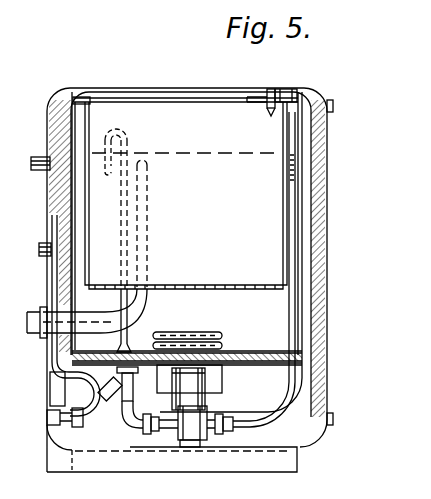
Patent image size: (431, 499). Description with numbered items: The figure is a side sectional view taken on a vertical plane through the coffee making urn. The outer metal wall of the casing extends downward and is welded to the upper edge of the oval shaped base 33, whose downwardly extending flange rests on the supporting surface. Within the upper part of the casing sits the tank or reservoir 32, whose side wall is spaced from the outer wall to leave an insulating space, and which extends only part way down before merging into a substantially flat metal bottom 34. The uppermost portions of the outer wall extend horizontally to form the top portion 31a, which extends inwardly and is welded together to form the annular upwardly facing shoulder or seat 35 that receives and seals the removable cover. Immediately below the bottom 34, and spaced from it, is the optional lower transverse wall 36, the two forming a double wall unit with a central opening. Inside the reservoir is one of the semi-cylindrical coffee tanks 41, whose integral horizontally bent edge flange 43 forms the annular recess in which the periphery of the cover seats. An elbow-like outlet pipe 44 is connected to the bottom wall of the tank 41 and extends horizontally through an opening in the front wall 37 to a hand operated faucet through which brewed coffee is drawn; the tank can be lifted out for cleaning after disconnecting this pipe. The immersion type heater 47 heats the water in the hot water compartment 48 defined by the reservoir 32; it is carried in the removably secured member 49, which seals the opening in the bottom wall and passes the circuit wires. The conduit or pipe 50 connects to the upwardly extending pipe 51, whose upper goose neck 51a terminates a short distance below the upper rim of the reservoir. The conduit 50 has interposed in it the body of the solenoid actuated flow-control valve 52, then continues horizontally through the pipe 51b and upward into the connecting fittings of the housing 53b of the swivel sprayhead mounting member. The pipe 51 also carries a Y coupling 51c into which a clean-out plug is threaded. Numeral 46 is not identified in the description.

The upwardly facing shoulder or seat 35 is at (47, 96).
The top portion 31a is at (323, 93).
The tank or reservoir 32 is at (290, 297).
The metal compartment or tank 41 is at (272, 229).
The edge flange 43 is at (82, 102).
The housing of swivel sprayhead mounting member 53b is at (288, 84).
The goose neck 51a is at (127, 127).
The upwardly extending pipe 51 is at (118, 341).
The elbow-like outlet pipe 44 is at (113, 312).
The inlet connection 46 is at (43, 332).
The front wall 37 is at (50, 229).
The Y coupling 51c is at (78, 331).
The heater 47 is at (217, 332).
The hot water compartment 48 is at (272, 320).
The bottom 34 is at (263, 353).
The lower transverse wall 36 is at (250, 365).
The removably secured member 49 is at (218, 374).
The solenoid actuated flow-control valve 52 is at (202, 438).
The conduit or pipe 50 is at (112, 400).
The pipe 51b is at (303, 383).
The base 33 is at (303, 456).